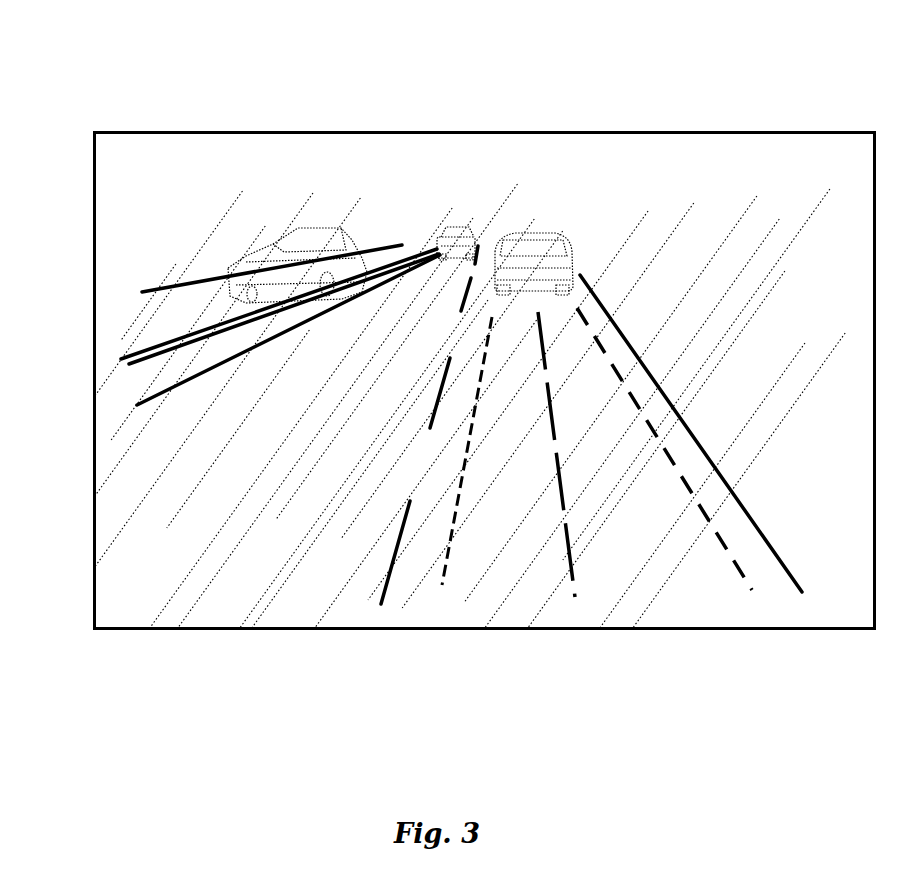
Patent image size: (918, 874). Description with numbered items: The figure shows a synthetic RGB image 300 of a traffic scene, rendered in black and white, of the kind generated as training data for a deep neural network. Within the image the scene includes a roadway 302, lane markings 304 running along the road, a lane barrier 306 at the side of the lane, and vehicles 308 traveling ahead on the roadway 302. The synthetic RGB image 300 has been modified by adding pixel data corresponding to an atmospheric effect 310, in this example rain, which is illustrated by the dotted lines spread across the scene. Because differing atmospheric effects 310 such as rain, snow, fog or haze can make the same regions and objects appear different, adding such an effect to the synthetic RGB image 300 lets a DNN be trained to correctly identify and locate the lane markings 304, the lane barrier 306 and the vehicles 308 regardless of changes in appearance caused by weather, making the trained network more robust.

The synthetic RGB image 300 is at (488, 44).
The roadway 302 is at (327, 517).
The lane markings 304 is at (523, 570).
The lane barrier 306 is at (157, 397).
The vehicles 308 is at (462, 178).
The atmospheric effect 310 is at (613, 193).